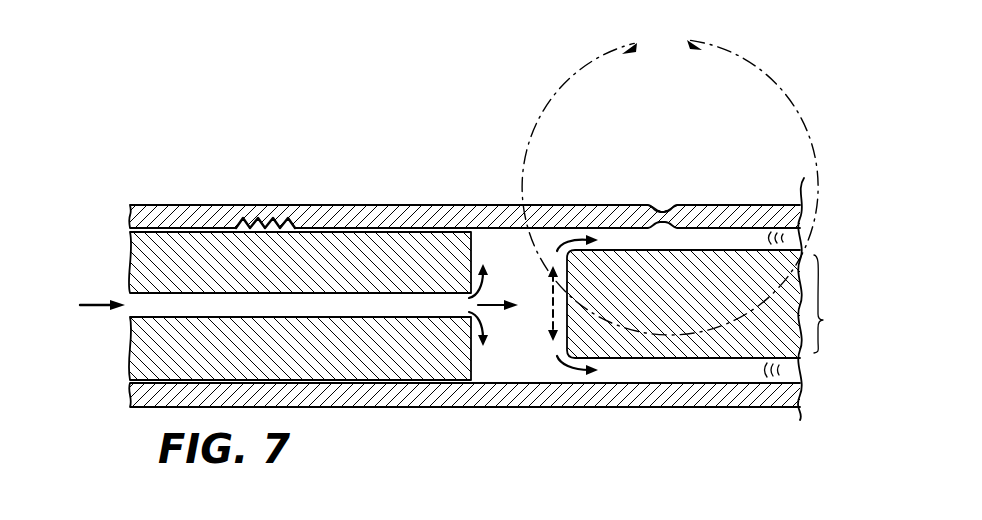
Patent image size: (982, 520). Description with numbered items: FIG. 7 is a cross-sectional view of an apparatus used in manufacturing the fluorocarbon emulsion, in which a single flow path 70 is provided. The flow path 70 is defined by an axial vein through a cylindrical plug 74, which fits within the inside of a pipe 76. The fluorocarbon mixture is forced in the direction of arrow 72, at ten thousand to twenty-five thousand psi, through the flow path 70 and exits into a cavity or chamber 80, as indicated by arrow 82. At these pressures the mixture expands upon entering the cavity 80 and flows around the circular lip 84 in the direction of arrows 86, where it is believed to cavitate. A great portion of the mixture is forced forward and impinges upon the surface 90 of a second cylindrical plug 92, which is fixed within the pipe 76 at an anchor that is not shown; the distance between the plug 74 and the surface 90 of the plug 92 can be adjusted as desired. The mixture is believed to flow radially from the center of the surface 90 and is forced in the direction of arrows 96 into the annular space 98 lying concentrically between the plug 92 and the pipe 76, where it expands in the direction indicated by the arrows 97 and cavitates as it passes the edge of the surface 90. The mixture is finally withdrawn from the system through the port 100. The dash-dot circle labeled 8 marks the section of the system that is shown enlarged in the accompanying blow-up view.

The detail region for enlarged view 8 is at (670, 178).
The flow path 70 is at (163, 312).
The arrow 72 is at (84, 297).
The cylindrical plug 74 is at (130, 367).
The pipe 76 is at (180, 213).
The cavity or chamber 80 is at (517, 368).
The arrow 82 is at (493, 302).
The circular lip 84 is at (338, 272).
The arrows 86 is at (472, 292).
The surface 90 is at (551, 370).
The cylindrical plug 92 is at (693, 308).
The arrows 96 is at (557, 250).
The arrows 97 is at (823, 320).
The annular space 98 is at (792, 238).
The port 100 is at (665, 207).